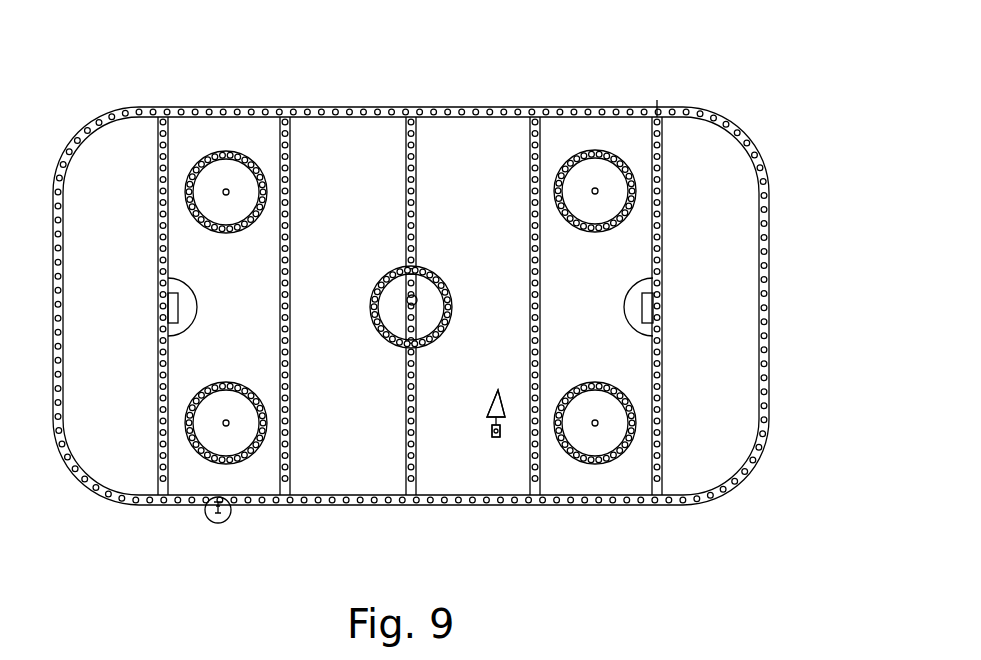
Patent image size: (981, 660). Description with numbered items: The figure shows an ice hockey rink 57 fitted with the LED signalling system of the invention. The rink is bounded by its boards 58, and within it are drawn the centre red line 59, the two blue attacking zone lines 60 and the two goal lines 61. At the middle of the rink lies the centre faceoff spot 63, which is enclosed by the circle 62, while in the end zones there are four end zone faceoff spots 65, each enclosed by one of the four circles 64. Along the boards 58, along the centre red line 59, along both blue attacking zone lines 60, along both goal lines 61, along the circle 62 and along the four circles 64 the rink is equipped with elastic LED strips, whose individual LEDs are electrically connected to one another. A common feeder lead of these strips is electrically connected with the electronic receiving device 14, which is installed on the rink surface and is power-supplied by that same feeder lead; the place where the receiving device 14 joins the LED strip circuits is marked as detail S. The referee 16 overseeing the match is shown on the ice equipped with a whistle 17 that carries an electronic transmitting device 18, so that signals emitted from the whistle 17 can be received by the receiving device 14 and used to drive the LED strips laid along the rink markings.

The ice hockey rink 57 is at (140, 165).
The boards 58 is at (659, 108).
The centre red line 59 is at (416, 132).
The blue attacking zone lines 60 is at (281, 145).
The goal lines 61 is at (158, 137).
The circle surrounding the centre faceoff spot 62 is at (445, 281).
The centre faceoff spot 63 is at (414, 295).
The circles surrounding end zone faceoff spots 64 is at (577, 152).
The end zone faceoff spots 65 is at (595, 190).
The electronic receiving device 14 is at (215, 513).
The detail of connection of the electronic receiving device S is at (222, 515).
The referee 16 is at (498, 390).
The whistle 17 is at (496, 437).
The electronic transmitting device 18 is at (494, 437).